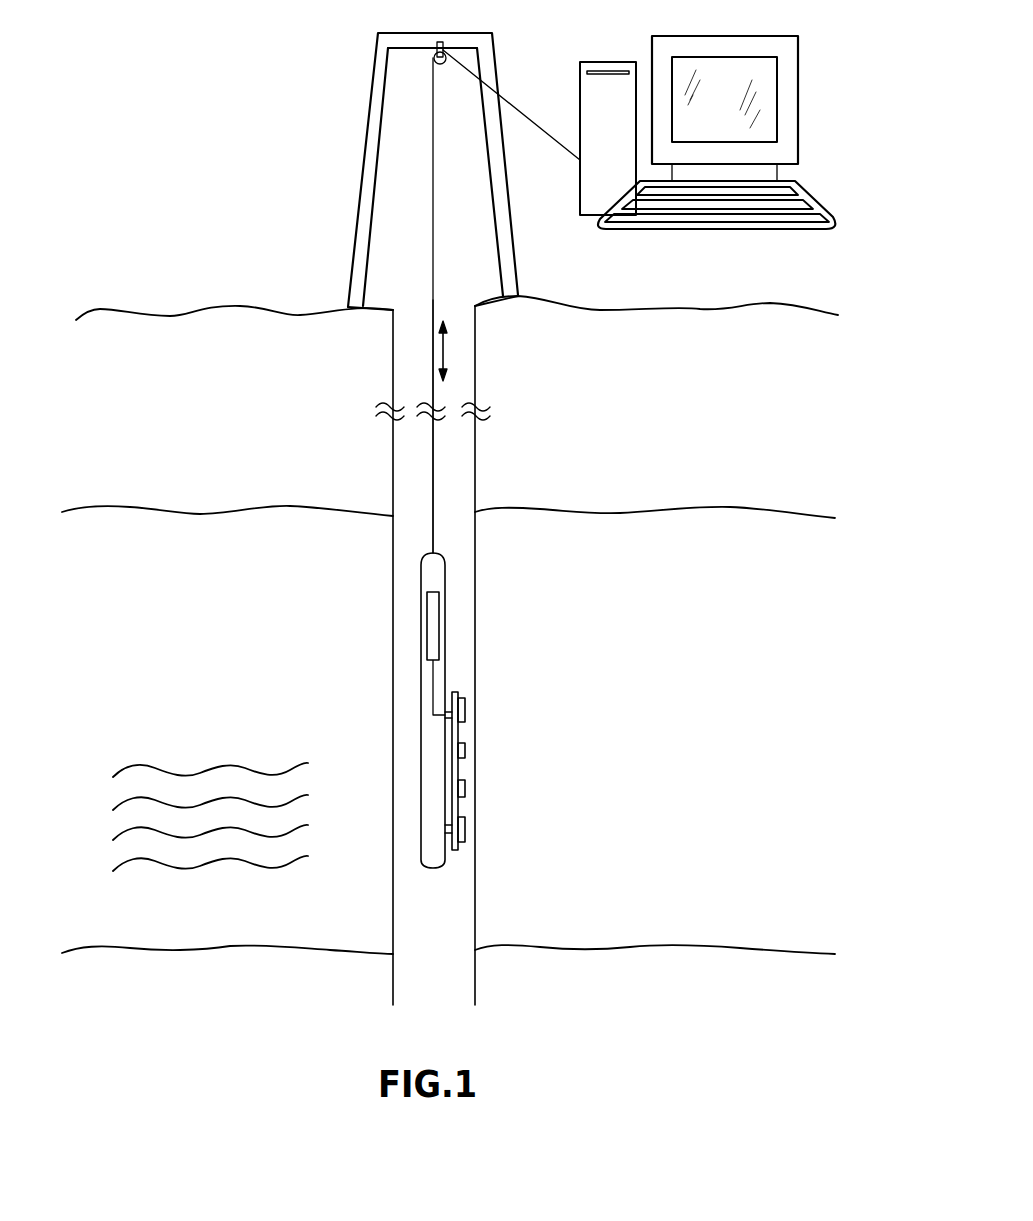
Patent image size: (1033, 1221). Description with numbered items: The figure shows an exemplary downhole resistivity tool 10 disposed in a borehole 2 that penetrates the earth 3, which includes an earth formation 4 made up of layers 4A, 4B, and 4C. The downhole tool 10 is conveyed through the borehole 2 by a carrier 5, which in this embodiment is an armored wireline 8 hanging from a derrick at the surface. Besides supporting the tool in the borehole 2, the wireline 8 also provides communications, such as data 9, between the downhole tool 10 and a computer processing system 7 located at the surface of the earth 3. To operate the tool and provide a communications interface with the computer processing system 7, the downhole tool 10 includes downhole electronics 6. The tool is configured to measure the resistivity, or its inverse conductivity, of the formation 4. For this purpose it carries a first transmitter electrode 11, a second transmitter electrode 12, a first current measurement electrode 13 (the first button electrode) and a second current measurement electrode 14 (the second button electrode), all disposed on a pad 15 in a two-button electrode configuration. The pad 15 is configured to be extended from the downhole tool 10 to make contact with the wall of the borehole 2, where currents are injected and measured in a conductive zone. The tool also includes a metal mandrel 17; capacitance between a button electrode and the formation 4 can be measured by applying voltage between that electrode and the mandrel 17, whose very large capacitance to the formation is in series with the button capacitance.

The borehole 2 is at (410, 323).
The earth 3 is at (751, 393).
The earth formation 4 is at (751, 696).
The layer 4A is at (104, 801).
The layer 4B is at (104, 834).
The layer 4C is at (104, 872).
The carrier 5 is at (432, 453).
The downhole electronics 6 is at (430, 632).
The computer processing system 7 is at (580, 77).
The armored wireline 8 is at (433, 278).
The data 9 is at (445, 352).
The downhole tool 10 is at (432, 709).
The first transmitter electrode 11 is at (465, 705).
The second transmitter electrode 12 is at (465, 832).
The first current measurement electrode 13 is at (465, 752).
The second current measurement electrode 14 is at (465, 790).
The pad 15 is at (458, 690).
The metal mandrel 17 is at (421, 742).